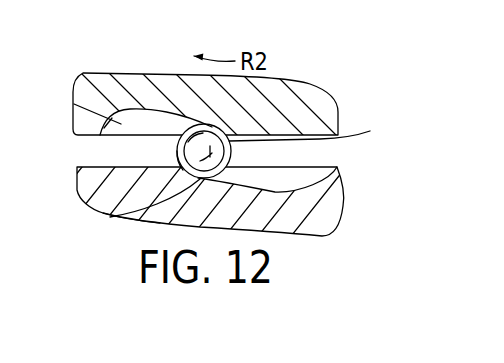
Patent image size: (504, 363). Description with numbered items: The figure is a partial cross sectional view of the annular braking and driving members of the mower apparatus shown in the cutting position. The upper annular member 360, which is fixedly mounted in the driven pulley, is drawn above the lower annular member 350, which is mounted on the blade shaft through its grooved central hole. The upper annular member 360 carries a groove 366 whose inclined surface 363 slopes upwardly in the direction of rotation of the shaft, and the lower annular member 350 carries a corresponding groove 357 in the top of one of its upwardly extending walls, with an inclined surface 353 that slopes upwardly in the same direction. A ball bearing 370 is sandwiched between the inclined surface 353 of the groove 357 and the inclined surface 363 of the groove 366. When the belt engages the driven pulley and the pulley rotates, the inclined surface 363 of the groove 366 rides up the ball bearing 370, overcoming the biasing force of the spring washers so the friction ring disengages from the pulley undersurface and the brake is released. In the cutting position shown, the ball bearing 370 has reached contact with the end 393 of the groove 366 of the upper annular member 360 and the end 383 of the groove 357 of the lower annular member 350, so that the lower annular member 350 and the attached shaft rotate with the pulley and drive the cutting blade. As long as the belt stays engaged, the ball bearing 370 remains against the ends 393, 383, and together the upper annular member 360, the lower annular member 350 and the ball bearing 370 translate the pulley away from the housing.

The lower annular member 350 is at (325, 222).
The inclined surface 353 is at (108, 217).
The groove 357 is at (288, 184).
The upper annular member 360 is at (313, 96).
The inclined surface 363 is at (177, 117).
The groove 366 is at (122, 122).
The ball bearing 370 is at (213, 152).
The end of the groove 383 is at (176, 161).
The end of the groove 393 is at (320, 131).